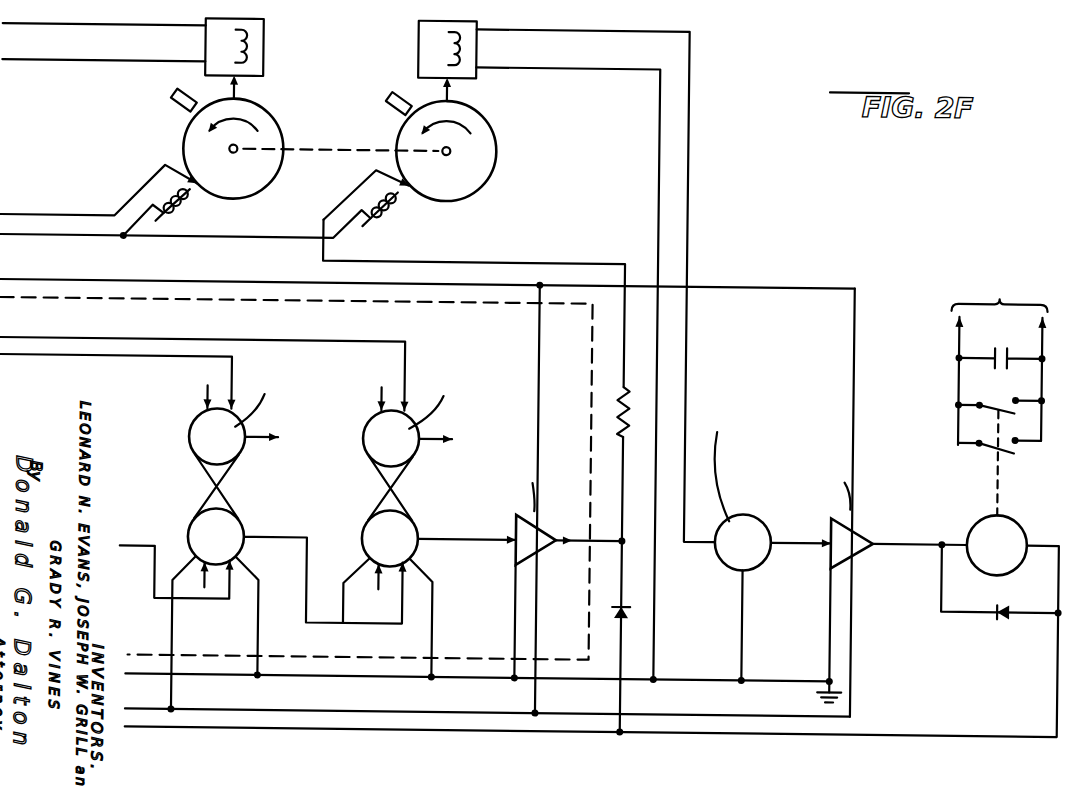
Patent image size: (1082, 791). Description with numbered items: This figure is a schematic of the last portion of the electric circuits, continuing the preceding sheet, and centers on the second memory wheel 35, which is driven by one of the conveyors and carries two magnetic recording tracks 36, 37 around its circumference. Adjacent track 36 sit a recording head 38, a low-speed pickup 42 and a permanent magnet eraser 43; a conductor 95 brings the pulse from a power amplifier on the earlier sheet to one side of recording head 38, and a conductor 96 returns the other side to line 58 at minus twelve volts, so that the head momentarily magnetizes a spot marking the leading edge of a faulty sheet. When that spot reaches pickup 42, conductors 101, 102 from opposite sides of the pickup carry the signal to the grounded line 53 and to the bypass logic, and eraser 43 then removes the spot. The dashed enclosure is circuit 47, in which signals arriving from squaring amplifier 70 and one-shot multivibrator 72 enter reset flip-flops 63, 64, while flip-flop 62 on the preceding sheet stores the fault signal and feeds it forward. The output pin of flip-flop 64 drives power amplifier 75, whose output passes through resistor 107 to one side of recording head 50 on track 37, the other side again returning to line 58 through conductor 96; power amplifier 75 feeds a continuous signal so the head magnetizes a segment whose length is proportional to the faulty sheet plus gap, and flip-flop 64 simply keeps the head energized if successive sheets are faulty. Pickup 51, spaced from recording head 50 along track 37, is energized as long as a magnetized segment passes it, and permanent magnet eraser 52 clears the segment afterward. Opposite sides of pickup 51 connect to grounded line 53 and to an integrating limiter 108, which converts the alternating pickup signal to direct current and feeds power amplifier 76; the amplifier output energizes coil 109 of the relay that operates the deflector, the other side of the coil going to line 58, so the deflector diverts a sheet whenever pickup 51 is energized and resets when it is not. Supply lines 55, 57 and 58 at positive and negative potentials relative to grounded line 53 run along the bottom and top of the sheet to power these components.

The conductor 101 is at (74, 24).
The conductor 102 is at (74, 60).
The pickup 42 is at (241, 92).
The permanent magnet eraser 43 is at (176, 104).
The magnetic recording track 36 is at (284, 121).
The second memory wheel 35 is at (247, 174).
The conductor 95 is at (44, 213).
The conductor 96 is at (44, 234).
The recording head 38 is at (194, 211).
The pickup 51 is at (419, 44).
The permanent magnet eraser 52 is at (392, 109).
The magnetic recording track 37 is at (495, 121).
The recording head 50 is at (395, 215).
The line 55 is at (46, 279).
The circuit 47 is at (500, 335).
The squaring amplifier 70 is at (98, 337).
The one-shot multivibrator 72 is at (98, 354).
The reset flip-flop 62 is at (161, 543).
The reset flip-flop 63 is at (227, 484).
The reset flip-flop 64 is at (389, 484).
The power amplifier 75 is at (536, 527).
The resistor 107 is at (624, 412).
The integrating limiter 108 is at (759, 513).
The power amplifier 76 is at (866, 532).
The coil 109 is at (1019, 523).
The grounded line 53 is at (170, 672).
The line 57 is at (240, 707).
The line 58 is at (241, 725).